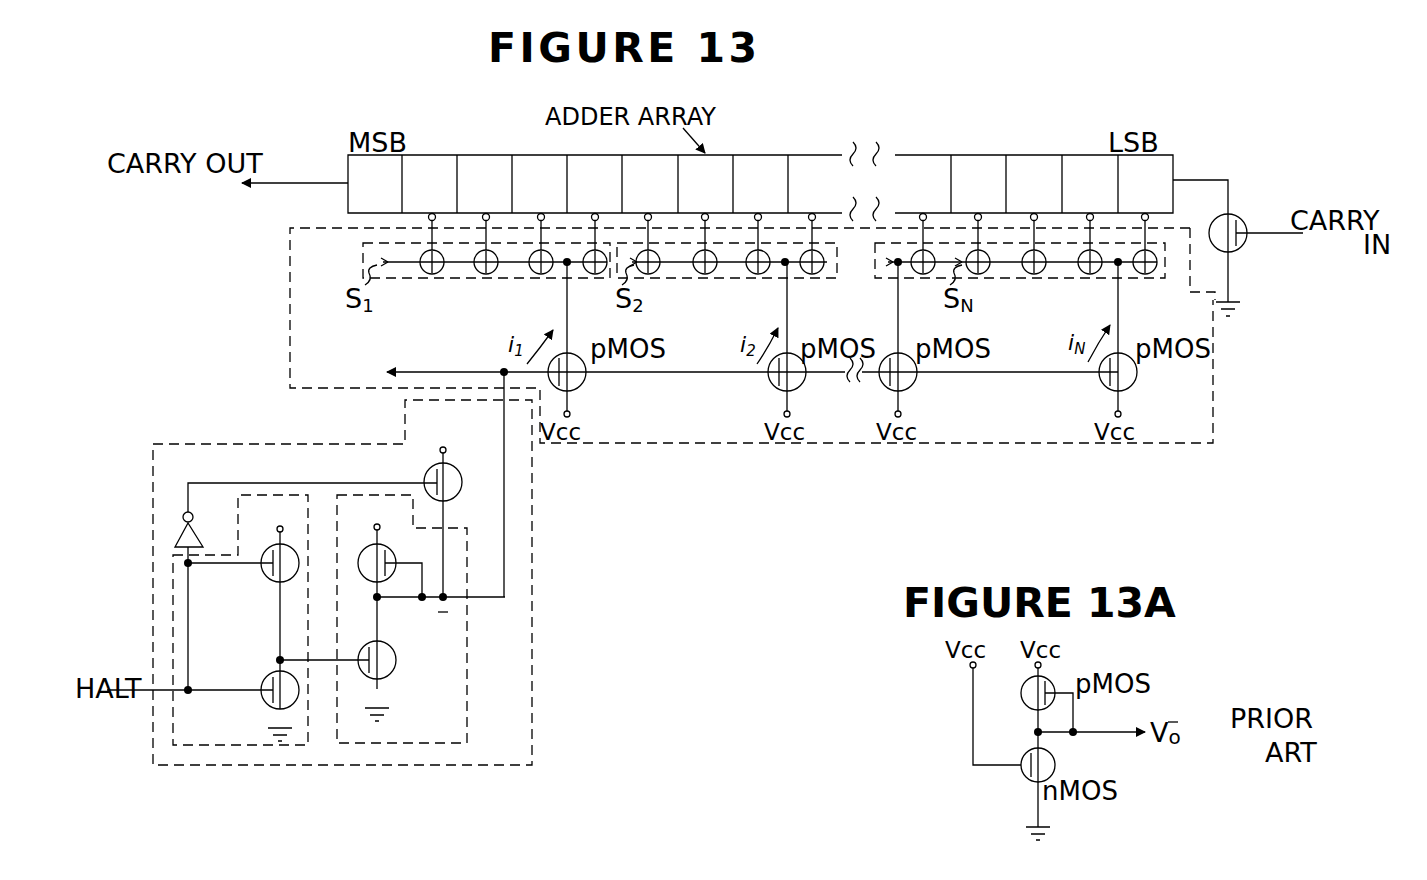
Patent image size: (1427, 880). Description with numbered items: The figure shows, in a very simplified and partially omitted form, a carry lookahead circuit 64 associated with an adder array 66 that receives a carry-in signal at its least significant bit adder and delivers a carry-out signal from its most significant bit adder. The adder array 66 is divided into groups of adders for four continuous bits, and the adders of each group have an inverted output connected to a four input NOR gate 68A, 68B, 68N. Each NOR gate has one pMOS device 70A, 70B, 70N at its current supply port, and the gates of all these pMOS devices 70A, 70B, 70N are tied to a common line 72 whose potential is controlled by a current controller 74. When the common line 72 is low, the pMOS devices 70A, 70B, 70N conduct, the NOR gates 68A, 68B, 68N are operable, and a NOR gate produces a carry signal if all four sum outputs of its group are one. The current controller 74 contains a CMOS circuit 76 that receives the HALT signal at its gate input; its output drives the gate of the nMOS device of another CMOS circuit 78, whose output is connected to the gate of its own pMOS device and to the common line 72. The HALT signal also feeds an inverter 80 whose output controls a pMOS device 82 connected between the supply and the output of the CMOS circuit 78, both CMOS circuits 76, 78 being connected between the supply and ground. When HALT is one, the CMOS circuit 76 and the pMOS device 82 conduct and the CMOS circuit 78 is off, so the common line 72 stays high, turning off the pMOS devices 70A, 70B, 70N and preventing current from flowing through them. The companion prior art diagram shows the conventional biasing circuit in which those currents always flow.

The carry lookahead circuit 64 is at (1217, 390).
The adder array 66 is at (810, 155).
The four input NOR gate 68A is at (455, 280).
The four input NOR gate 68B is at (670, 280).
The four input NOR gate 68N is at (1000, 280).
The pMOS device 70A is at (576, 388).
The pMOS device 70B is at (796, 388).
The pMOS device 70N is at (1127, 388).
The common line 72 is at (403, 372).
The current controller 74 is at (535, 702).
The CMOS circuit 76 is at (226, 750).
The CMOS circuit 78 is at (362, 750).
The inverter 80 is at (178, 540).
The pMOS device 82 is at (453, 500).